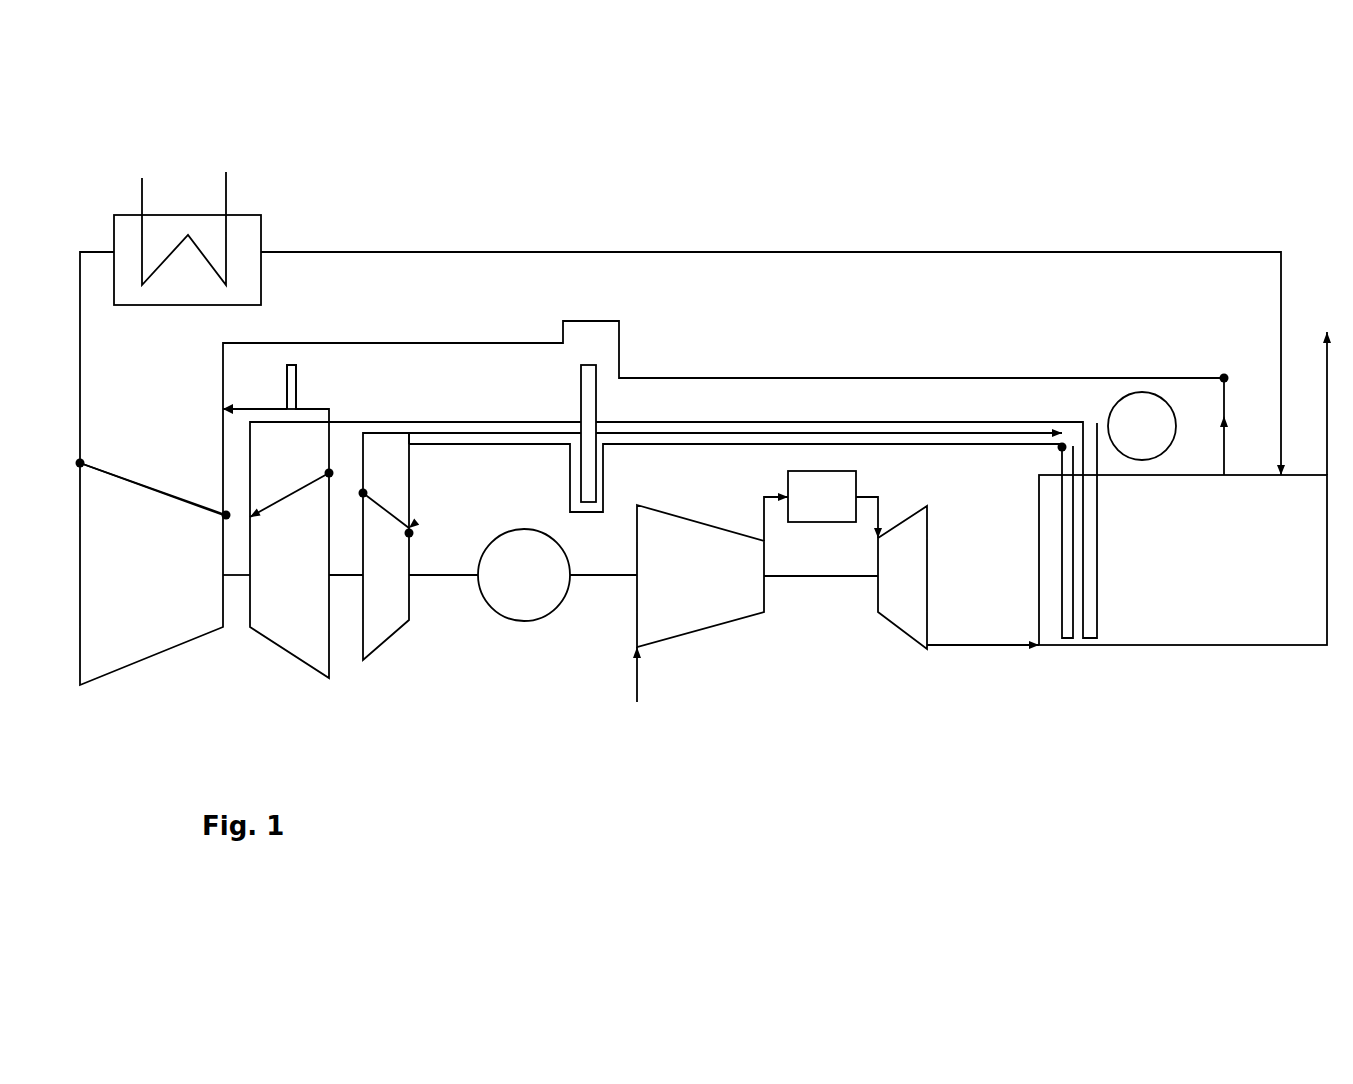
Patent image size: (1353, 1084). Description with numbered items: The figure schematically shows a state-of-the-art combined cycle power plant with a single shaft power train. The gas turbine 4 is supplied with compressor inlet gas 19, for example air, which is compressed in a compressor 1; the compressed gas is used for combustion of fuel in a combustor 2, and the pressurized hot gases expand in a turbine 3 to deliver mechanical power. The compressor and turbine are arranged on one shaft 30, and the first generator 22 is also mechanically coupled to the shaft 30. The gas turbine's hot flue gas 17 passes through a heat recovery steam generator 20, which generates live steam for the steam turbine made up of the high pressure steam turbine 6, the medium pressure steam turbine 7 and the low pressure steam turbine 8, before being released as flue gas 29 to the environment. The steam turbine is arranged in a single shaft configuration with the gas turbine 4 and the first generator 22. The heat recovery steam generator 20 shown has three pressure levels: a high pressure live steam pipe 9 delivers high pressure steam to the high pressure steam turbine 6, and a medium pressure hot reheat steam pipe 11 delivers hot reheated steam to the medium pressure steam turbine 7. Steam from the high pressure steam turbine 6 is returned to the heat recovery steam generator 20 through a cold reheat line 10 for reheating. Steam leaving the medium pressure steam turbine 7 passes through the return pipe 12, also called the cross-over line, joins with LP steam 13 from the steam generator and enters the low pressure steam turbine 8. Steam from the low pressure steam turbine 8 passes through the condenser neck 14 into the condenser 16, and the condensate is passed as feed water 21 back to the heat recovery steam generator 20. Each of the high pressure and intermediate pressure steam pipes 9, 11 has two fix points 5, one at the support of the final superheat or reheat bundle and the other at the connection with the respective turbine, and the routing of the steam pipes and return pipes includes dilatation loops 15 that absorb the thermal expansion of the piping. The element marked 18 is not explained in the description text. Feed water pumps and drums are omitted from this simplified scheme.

The compressor 1 is at (686, 599).
The combustor 2 is at (813, 511).
The turbine 3 is at (891, 601).
The gas turbine 4 is at (806, 687).
The fix point 5 is at (329, 473).
The high pressure steam turbine 6 is at (376, 587).
The medium pressure steam turbine 7 is at (286, 587).
The low pressure steam turbine 8 is at (160, 587).
The high pressure live steam pipe 9 is at (547, 447).
The cold reheat line 10 is at (728, 435).
The medium pressure hot reheat steam pipe 11 is at (451, 422).
The return pipe 12 is at (316, 407).
The LP steam 13 is at (262, 343).
The condenser neck 14 is at (82, 375).
The dilatation loop 15 is at (298, 367).
The condenser 16 is at (162, 238).
The hot flue gas 17 is at (967, 648).
The control unit 18 is at (1142, 426).
The compressor inlet gas 19 is at (612, 686).
The heat recovery steam generator 20 is at (1163, 574).
The feed water 21 is at (1278, 362).
The first generator 22 is at (524, 575).
The flue gas 29 is at (1326, 383).
The shaft 30 is at (613, 580).